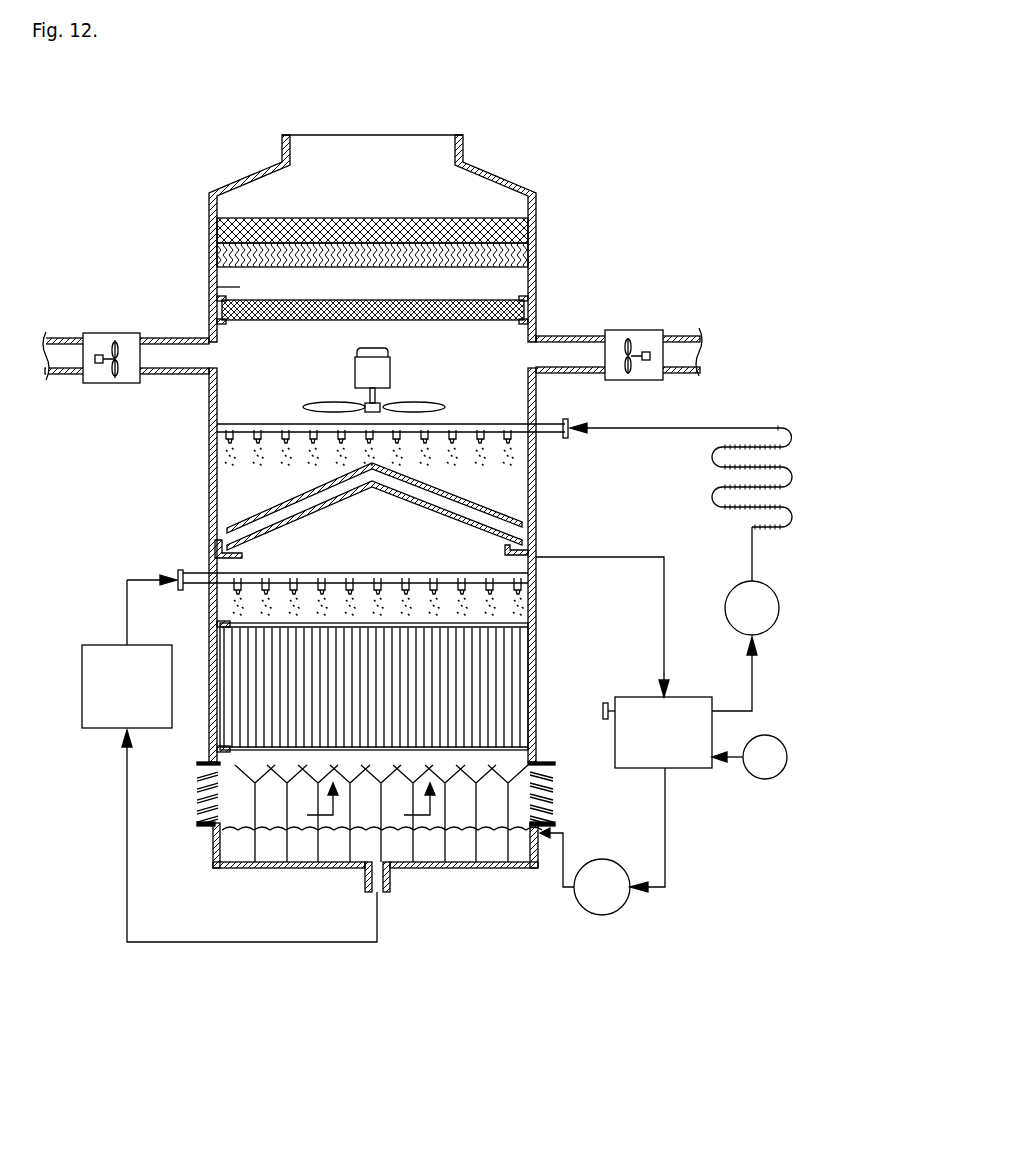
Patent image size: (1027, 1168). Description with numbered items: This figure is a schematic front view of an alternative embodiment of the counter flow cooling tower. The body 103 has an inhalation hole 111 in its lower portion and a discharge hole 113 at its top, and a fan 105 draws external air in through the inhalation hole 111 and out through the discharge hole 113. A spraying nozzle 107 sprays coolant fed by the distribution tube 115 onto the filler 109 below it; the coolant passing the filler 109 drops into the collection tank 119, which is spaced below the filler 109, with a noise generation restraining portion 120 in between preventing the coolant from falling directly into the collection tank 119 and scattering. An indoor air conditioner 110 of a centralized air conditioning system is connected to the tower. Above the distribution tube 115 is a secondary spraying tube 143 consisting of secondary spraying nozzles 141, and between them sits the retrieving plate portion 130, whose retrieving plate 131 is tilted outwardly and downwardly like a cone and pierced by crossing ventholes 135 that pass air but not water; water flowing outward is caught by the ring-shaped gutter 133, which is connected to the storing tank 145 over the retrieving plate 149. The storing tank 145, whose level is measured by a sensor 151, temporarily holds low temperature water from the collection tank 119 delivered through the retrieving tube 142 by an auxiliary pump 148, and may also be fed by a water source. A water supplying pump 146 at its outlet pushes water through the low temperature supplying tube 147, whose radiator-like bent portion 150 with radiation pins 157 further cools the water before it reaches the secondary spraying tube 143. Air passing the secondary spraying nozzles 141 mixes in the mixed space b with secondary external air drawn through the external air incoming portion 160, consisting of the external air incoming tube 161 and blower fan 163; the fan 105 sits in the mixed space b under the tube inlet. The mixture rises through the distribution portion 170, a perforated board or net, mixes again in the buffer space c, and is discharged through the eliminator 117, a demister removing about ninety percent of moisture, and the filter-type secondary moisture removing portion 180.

The discharge hole 113 is at (340, 150).
The secondary moisture removing portion 180 is at (536, 230).
The eliminator 117 is at (217, 256).
The buffer space c is at (217, 287).
The distribution portion 170 is at (217, 307).
The external air incoming portion 160 is at (619, 310).
The external air incoming tube 161 is at (562, 336).
The blower fan 163 is at (643, 340).
The fan 105 is at (420, 408).
The mixed space b is at (240, 398).
The secondary spraying tube 143 is at (548, 432).
The secondary spraying nozzle 141 is at (535, 445).
The retrieving plate portion 130 is at (329, 501).
The ventholes 135 is at (505, 508).
The retrieving plate 131 is at (510, 522).
The gutter 133 is at (210, 557).
The retrieving plate 149 is at (640, 557).
The spraying nozzle 107 is at (232, 580).
The body 103 is at (536, 602).
The distribution tube 115 is at (193, 568).
The indoor air conditioner 110 is at (107, 645).
The filler 109 is at (513, 647).
The inhalation hole 111 is at (553, 790).
The noise generation restraining portion 120 is at (240, 840).
The collection tank 119 is at (452, 858).
The radiation pins 157 is at (782, 428).
The bent portion 150 is at (767, 527).
The water supplying pump 146 is at (780, 607).
The low temperature supplying tube 147 is at (752, 683).
The storing tank 145 is at (688, 770).
The sensor 151 is at (602, 710).
The retrieving tube 142 is at (655, 888).
The auxiliary pump 148 is at (603, 915).